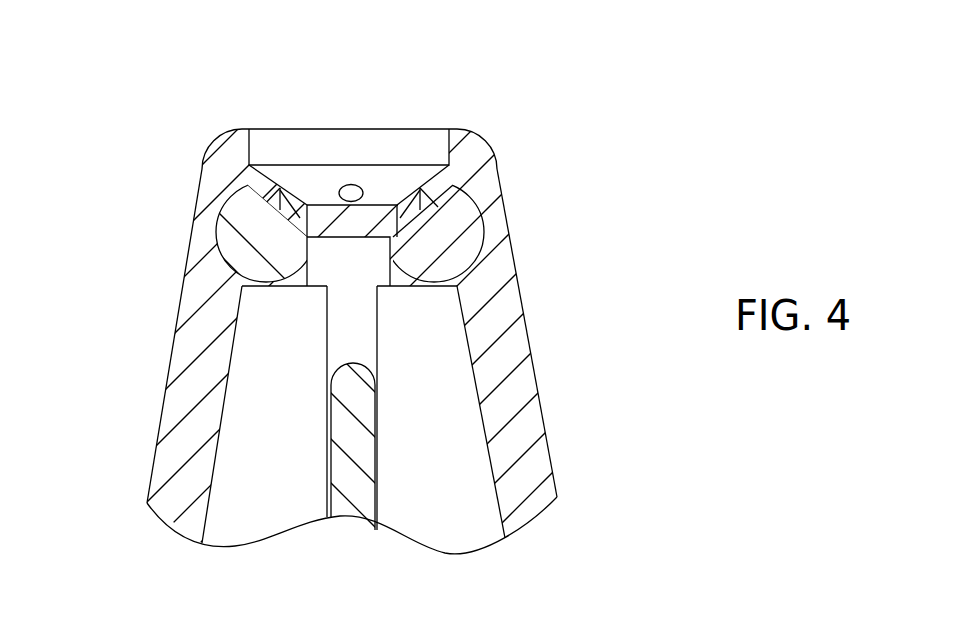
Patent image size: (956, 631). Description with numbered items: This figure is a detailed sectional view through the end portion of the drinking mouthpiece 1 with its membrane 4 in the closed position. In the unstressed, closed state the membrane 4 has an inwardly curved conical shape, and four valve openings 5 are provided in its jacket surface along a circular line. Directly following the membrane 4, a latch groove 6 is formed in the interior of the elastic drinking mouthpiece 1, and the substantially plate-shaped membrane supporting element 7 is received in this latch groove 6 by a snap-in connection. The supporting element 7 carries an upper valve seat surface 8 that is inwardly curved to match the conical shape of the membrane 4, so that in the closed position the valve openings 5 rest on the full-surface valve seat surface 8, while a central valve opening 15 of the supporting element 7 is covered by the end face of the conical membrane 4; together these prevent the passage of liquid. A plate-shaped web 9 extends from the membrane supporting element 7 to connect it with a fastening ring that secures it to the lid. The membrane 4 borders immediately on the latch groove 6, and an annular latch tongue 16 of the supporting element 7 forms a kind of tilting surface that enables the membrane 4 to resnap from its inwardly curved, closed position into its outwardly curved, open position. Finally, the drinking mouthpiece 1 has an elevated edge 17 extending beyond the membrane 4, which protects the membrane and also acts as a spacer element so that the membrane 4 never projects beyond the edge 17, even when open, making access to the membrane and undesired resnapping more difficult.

The drinking mouthpiece 1 is at (541, 366).
The membrane 4 is at (399, 176).
The valve openings 5 is at (467, 182).
The latch groove 6 is at (211, 231).
The membrane supporting element 7 is at (445, 237).
The valve seat surface 8 is at (292, 215).
The plate-shaped web 9 is at (350, 447).
The central valve opening 15 is at (322, 270).
The annular latch tongue 16 is at (243, 190).
The elevated edge 17 is at (274, 146).